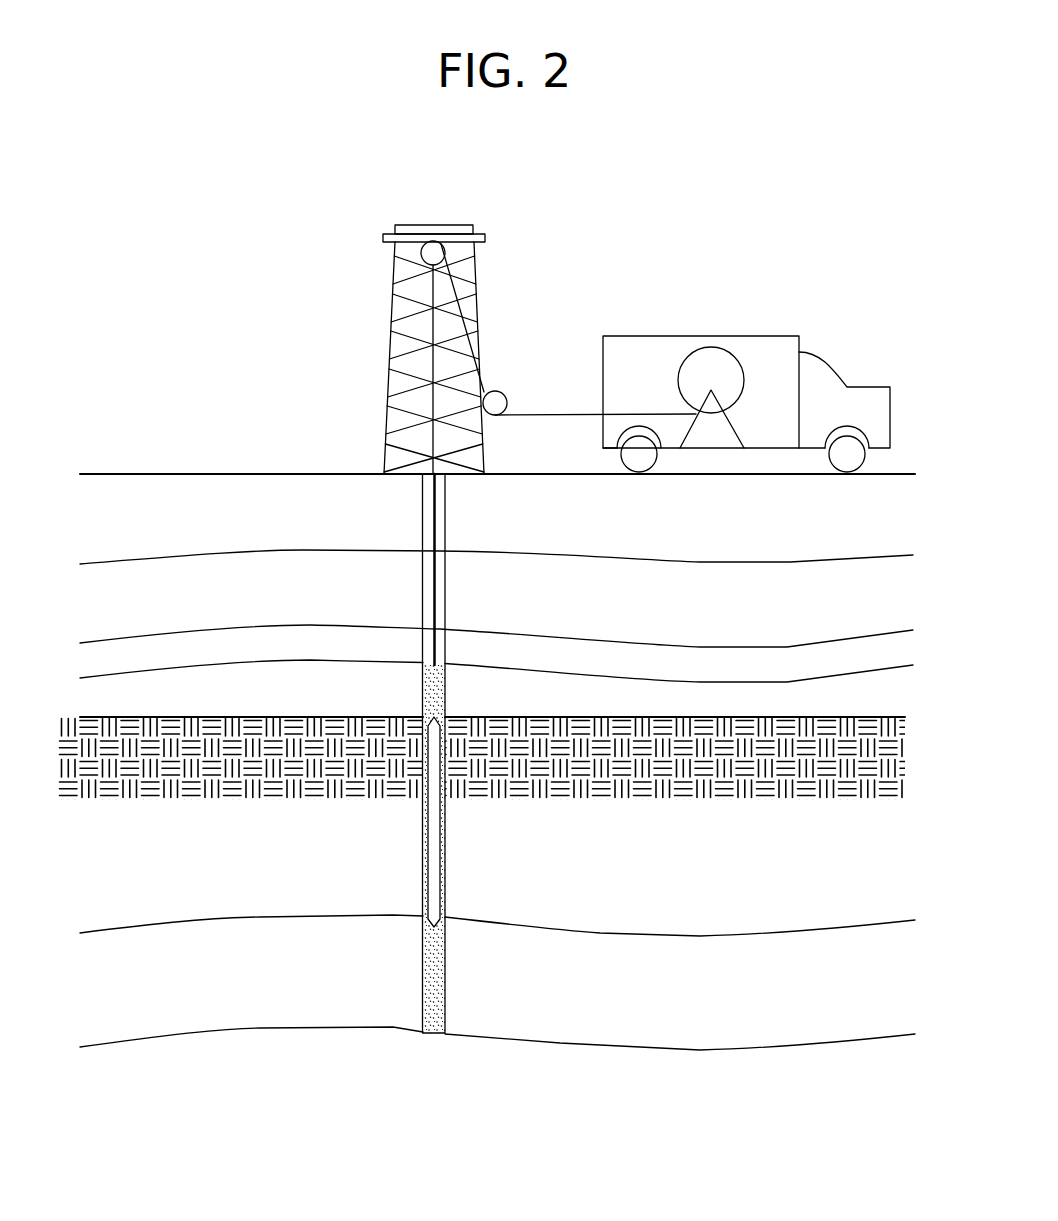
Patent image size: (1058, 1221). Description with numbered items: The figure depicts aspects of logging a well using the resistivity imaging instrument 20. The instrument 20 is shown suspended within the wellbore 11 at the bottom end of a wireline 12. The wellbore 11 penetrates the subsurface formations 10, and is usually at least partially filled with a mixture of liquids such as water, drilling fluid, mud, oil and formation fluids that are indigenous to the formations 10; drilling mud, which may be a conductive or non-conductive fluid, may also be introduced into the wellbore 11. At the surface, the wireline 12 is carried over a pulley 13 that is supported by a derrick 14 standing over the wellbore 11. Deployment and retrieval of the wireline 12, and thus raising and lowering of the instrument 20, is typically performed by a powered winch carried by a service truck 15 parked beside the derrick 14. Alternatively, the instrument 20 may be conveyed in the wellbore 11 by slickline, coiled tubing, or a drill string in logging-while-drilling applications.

The formations 10 is at (772, 611).
The wellbore 11 is at (442, 579).
The wireline 12 is at (445, 606).
The pulley 13 is at (433, 253).
The derrick 14 is at (388, 402).
The service truck 15 is at (762, 340).
The instrument 20 is at (435, 890).